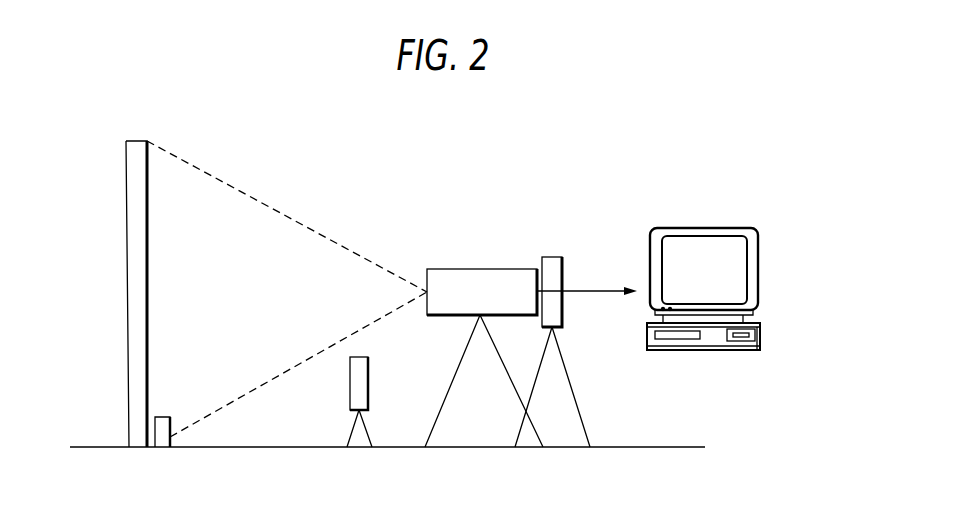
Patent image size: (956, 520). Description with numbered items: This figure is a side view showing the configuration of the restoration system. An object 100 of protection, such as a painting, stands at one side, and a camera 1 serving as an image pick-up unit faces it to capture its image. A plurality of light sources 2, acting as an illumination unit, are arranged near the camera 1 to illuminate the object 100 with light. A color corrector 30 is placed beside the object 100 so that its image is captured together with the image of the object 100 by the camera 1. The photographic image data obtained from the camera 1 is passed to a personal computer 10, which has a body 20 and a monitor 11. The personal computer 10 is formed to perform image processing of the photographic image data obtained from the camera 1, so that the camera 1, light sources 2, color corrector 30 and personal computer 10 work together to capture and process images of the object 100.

The camera 1 is at (480, 269).
The light sources 2 is at (552, 257).
The personal computer 10 is at (736, 269).
The monitor 11 is at (705, 228).
The body 20 is at (760, 334).
The color corrector 30 is at (163, 417).
The object of protection 100 is at (126, 294).